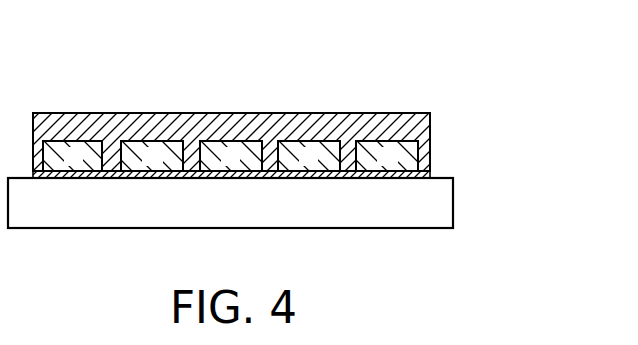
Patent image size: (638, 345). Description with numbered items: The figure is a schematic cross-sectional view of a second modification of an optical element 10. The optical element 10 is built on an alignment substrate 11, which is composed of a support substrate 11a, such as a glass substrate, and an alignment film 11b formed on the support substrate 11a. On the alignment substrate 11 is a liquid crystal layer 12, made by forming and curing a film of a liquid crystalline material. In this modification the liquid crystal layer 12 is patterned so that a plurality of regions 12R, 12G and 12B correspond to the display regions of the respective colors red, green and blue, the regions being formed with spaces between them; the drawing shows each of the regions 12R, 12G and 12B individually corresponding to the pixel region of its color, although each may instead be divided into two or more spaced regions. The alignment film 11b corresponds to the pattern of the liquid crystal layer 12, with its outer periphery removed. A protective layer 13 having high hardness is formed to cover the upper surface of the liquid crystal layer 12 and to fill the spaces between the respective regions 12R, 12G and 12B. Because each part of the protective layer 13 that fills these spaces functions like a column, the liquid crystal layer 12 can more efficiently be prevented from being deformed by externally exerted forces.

The optical element 10 is at (520, 98).
The alignment substrate 11 is at (290, 193).
The support substrate 11a is at (443, 209).
The alignment film 11b is at (428, 175).
The liquid crystal layer 12 is at (248, 54).
The region 12R is at (76, 141).
The region 12G is at (153, 141).
The region 12B is at (232, 141).
The protective layer 13 is at (431, 118).